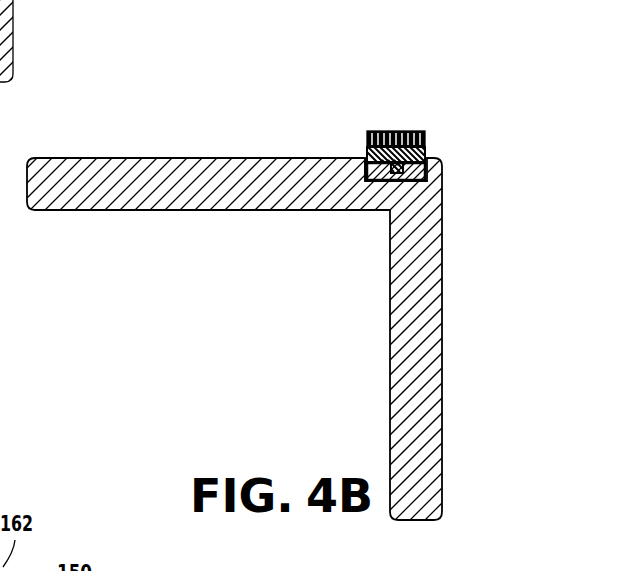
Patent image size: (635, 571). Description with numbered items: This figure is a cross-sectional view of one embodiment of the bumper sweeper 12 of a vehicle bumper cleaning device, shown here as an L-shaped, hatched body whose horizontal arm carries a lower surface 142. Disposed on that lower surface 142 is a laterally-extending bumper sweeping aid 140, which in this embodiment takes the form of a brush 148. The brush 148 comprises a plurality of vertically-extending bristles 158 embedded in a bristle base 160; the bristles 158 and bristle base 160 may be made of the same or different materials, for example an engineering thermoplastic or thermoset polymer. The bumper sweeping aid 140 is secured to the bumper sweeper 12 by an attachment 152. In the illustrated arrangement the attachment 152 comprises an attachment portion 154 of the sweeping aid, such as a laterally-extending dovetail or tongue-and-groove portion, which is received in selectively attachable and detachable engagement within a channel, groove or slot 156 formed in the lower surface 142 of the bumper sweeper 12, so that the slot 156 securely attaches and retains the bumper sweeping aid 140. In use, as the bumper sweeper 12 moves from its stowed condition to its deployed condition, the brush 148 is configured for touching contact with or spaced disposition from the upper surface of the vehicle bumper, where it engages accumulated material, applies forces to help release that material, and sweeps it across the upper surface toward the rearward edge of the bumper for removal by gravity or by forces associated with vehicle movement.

The bumper sweeper 12 is at (444, 293).
The bumper sweeping aid 140 is at (380, 111).
The lower surface 142 is at (195, 157).
The brush 148 is at (429, 136).
The attachment 152 is at (427, 172).
The attachment portion 154 is at (392, 181).
The slot 156 is at (364, 171).
The bristles 158 is at (407, 131).
The bristle base 160 is at (425, 155).